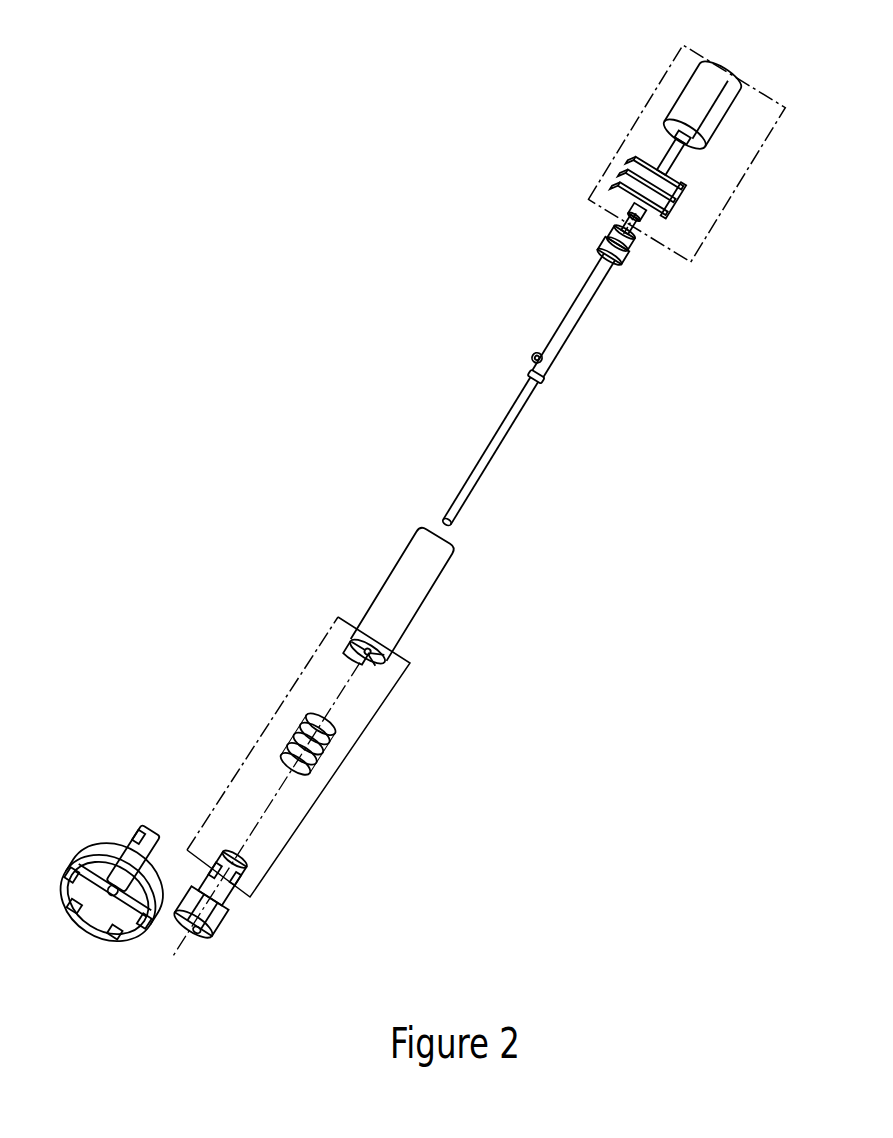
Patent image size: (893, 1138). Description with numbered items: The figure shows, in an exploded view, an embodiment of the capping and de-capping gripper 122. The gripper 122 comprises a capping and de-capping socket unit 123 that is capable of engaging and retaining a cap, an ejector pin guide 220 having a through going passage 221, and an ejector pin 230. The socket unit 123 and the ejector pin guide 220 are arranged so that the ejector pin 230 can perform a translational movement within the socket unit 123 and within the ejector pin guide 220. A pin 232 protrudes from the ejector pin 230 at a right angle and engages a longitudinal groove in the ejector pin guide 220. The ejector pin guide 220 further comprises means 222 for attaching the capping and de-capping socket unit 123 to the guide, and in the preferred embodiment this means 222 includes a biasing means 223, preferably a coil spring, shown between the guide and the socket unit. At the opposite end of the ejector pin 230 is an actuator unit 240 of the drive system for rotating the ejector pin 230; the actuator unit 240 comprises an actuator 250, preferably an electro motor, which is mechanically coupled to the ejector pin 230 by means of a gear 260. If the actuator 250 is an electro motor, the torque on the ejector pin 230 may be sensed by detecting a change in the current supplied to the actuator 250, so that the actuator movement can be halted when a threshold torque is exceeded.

The capping and de-capping gripper 122 is at (143, 58).
The capping and de-capping socket unit 123 is at (125, 835).
The ejector pin guide 220 is at (378, 583).
The through going passage 221 is at (177, 950).
The means for attaching 222 is at (240, 758).
The biasing means 223 is at (292, 727).
The ejector pin 230 is at (523, 413).
The pin 232 is at (537, 358).
The actuator unit 240 is at (632, 123).
The actuator 250 is at (680, 87).
The gear 260 is at (673, 228).